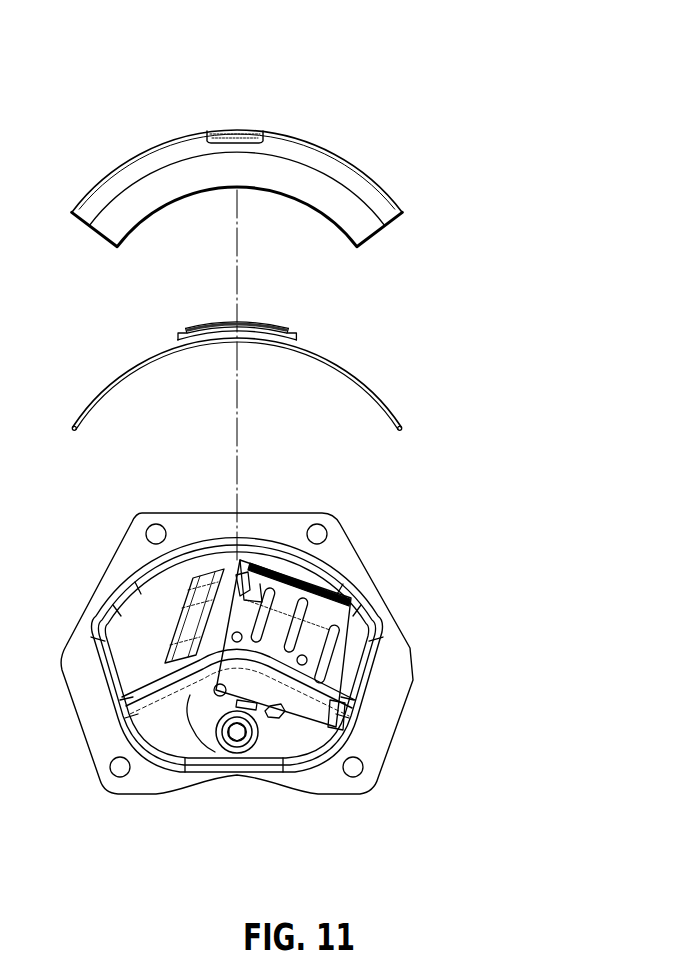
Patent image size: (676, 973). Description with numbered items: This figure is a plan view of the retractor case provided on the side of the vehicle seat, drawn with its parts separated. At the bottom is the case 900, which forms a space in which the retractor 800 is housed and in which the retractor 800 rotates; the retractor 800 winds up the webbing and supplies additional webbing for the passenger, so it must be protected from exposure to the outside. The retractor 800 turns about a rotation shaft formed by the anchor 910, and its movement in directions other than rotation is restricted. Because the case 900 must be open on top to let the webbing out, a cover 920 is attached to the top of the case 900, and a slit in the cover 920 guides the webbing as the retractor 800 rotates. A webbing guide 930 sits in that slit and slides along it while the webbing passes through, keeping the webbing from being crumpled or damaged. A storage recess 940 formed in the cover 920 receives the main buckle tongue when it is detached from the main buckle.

The retractor 800 is at (248, 583).
The case 900 is at (341, 728).
The anchor 910 is at (237, 734).
The cover 920 is at (400, 207).
The webbing guide 930 is at (402, 424).
The storage recess 940 is at (234, 129).